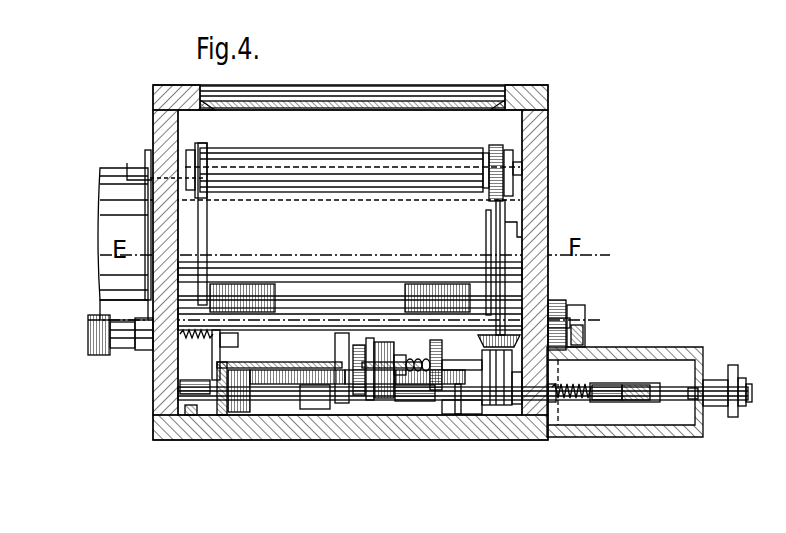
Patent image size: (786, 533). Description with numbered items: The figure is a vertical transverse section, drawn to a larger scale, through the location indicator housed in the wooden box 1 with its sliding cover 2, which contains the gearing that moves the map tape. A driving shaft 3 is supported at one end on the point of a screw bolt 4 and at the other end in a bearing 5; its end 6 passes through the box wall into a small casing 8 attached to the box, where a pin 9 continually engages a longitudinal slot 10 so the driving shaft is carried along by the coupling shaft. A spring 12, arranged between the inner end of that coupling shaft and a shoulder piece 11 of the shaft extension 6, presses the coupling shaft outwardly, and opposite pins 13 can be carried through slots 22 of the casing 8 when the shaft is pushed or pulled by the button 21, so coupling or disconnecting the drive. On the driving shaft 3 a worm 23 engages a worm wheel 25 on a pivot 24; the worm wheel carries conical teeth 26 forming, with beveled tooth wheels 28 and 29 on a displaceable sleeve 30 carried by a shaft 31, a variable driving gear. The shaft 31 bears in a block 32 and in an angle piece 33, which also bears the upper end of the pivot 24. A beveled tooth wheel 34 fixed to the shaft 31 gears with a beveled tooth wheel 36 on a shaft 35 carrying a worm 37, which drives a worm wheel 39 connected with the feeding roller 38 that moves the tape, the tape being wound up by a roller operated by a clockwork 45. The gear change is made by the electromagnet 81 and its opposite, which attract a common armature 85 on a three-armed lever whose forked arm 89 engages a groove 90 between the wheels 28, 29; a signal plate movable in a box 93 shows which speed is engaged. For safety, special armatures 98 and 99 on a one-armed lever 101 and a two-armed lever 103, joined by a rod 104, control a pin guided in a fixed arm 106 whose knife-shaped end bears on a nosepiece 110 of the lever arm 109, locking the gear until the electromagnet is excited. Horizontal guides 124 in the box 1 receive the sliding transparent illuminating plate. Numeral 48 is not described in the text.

The wooden box 1 is at (156, 123).
The sliding cover 2 is at (292, 98).
The driving shaft 3 is at (476, 405).
The screw bolt 4 is at (262, 410).
The bearing 5 is at (520, 408).
The shaft extension 6 is at (556, 393).
The casing 8 is at (650, 352).
The pin 9 is at (614, 394).
The longitudinal slot 10 is at (594, 393).
The shoulder piece 11 is at (556, 410).
The spring 12 is at (578, 410).
The pins 13 is at (694, 405).
The button 21 is at (736, 420).
The slots 22 is at (705, 370).
The worm 23 is at (345, 400).
The pivot 24 is at (346, 330).
The worm wheel 25 is at (410, 402).
The conical teeth 26 is at (318, 412).
The beveled tooth wheel 28 is at (360, 340).
The beveled tooth wheel 29 is at (376, 338).
The sleeve 30 is at (430, 398).
The shaft 31 is at (456, 400).
The block 32 is at (500, 408).
The angle piece 33 is at (238, 414).
The beveled tooth wheel 34 is at (478, 342).
The shaft 35 is at (512, 248).
The beveled tooth wheel 36 is at (525, 340).
The worm 37 is at (493, 150).
The feeding roller 38 is at (352, 158).
The worm wheel 39 is at (508, 152).
The clockwork 45 is at (118, 176).
The gear 48 is at (465, 280).
The electromagnet 81 is at (246, 265).
The armature 85 is at (352, 335).
The arm 89 is at (392, 362).
The groove 90 is at (418, 360).
The box 93 is at (96, 357).
The armature 98 is at (586, 312).
The armature 99 is at (102, 318).
The one-armed lever 101 is at (584, 329).
The two-armed lever 103 is at (104, 356).
The rod 104 is at (296, 318).
The fixed arm 106 is at (178, 372).
The arm 109 is at (272, 290).
The nosepiece 110 is at (248, 298).
The horizontal guides 124 is at (196, 192).